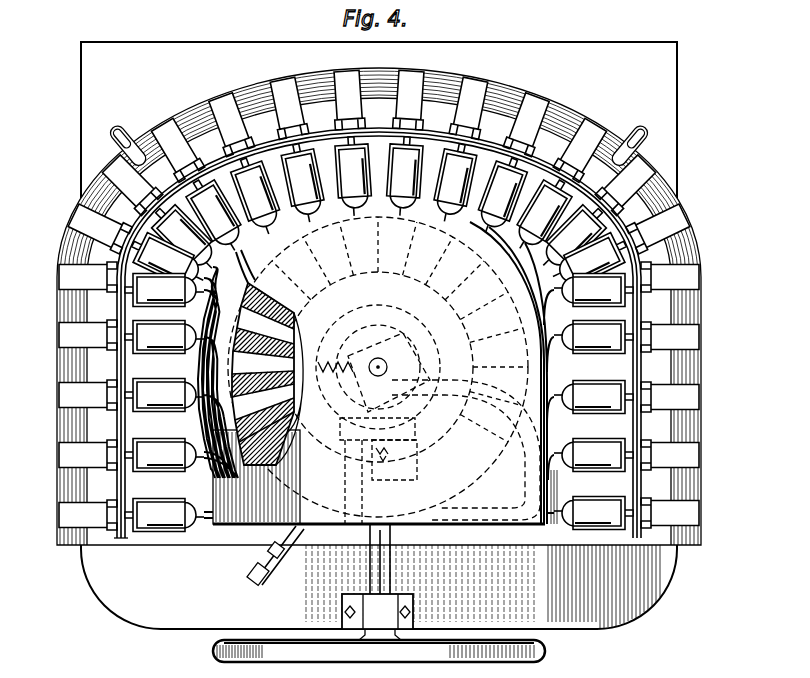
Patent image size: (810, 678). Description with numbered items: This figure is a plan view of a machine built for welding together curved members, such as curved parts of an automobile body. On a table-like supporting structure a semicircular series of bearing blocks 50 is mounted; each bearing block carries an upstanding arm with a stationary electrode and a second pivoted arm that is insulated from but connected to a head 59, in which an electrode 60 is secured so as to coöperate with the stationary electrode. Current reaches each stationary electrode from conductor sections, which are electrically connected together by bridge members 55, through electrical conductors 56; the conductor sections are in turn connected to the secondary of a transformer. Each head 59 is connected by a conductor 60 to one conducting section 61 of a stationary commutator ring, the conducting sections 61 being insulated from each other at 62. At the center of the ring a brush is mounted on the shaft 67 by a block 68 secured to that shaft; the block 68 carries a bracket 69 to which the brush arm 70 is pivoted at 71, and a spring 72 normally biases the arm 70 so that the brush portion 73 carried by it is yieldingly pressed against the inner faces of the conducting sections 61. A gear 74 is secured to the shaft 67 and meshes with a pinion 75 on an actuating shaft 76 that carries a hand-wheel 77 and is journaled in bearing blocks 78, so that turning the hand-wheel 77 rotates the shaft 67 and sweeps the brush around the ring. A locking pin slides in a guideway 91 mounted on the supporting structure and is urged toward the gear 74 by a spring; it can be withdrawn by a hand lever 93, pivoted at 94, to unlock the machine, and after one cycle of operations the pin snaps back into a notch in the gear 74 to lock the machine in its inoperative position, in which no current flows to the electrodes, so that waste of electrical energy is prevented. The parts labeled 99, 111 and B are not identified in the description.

The bearing block 50 is at (142, 445).
The bridge member 55 is at (660, 140).
The electrical conductor 56 is at (240, 105).
The head 59 is at (80, 229).
The electrode 60 is at (272, 250).
The conducting section 61 is at (297, 310).
The insulation 62 is at (332, 346).
The shaft 67 is at (388, 366).
The block 68 is at (422, 372).
The bracket 69 is at (378, 359).
The brush arm 70 is at (292, 432).
The pivot 71 is at (350, 470).
The spring 72 is at (400, 329).
The brush portion 73 is at (418, 478).
The gear 74 is at (436, 405).
The pinion 75 is at (416, 430).
The actuating shaft 76 is at (391, 573).
The hand-wheel 77 is at (545, 654).
The bearing block 78 is at (414, 604).
The guideway 91 is at (250, 578).
The hand lever 93 is at (278, 566).
The pivot 94 is at (268, 552).
The casing 99 is at (677, 100).
The terminal 111 is at (130, 538).
The armature B is at (389, 368).